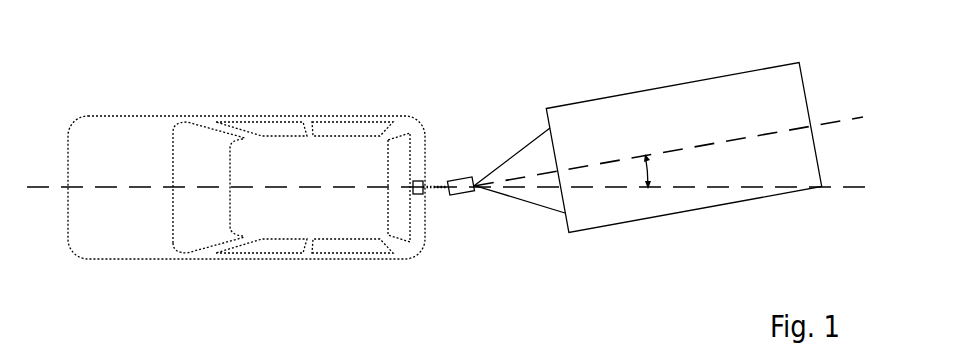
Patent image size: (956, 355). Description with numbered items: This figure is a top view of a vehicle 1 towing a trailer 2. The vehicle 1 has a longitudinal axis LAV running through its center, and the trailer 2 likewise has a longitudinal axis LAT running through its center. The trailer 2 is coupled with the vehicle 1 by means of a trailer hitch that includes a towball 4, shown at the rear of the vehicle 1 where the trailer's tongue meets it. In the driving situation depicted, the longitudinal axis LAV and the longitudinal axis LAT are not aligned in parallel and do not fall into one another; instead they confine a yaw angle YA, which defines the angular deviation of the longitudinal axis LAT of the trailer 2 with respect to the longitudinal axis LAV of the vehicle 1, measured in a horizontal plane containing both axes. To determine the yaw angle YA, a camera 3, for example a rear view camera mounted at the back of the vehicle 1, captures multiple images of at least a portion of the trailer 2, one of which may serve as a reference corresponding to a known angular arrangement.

The vehicle 1 is at (282, 116).
The trailer 2 is at (594, 99).
The camera 3 is at (423, 182).
The towball 4 is at (458, 214).
The longitudinal axis of the vehicle LAV is at (28, 187).
The longitudinal axis of the trailer LAT is at (735, 138).
The yaw angle YA is at (653, 174).